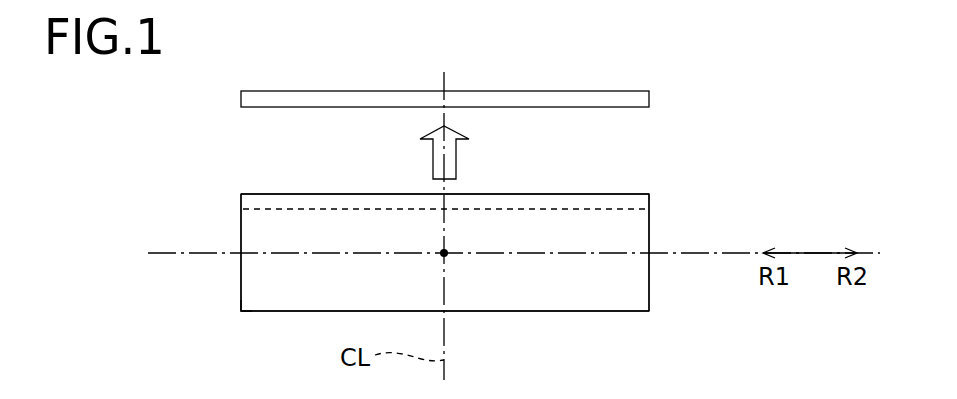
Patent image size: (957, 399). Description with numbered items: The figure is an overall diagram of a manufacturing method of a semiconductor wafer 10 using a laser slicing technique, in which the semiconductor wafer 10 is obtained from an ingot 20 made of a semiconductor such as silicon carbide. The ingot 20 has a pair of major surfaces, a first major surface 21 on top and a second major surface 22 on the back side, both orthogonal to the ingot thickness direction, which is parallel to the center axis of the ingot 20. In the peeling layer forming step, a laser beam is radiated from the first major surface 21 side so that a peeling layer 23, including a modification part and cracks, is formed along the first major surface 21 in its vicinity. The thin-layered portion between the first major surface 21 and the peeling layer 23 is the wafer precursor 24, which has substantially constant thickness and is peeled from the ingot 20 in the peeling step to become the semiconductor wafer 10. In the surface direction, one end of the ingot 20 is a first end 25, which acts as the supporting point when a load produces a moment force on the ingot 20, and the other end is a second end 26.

The semiconductor wafer 10 is at (245, 99).
The ingot 20 is at (250, 293).
The first major surface 21 is at (283, 194).
The second major surface 22 is at (610, 311).
The peeling layer 23 is at (649, 209).
The wafer precursor 24 is at (248, 202).
The first end 25 is at (648, 192).
The second end 26 is at (241, 311).